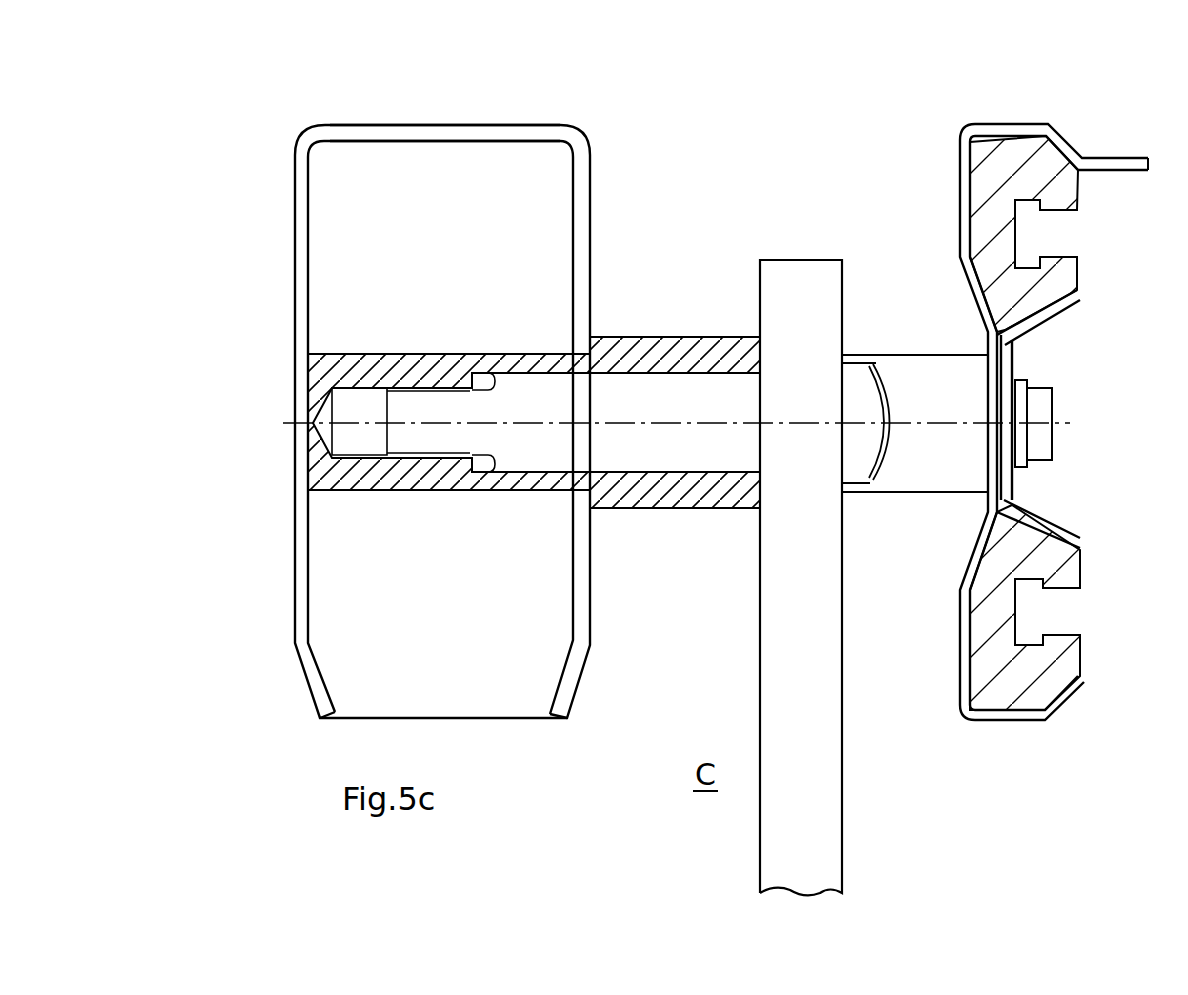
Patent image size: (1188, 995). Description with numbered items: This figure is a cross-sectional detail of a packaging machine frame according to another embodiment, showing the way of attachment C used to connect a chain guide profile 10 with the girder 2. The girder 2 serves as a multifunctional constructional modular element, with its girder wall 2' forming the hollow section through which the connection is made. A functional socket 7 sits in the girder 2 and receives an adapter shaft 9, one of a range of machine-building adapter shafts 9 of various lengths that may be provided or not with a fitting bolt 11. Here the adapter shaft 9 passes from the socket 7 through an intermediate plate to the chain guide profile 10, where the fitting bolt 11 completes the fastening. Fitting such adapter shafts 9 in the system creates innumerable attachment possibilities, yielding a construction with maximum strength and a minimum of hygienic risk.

The girder 2 is at (383, 421).
The girder 2' is at (445, 90).
The functional socket 7 is at (345, 475).
The adapter shaft 9 is at (660, 492).
The chain guide profile 10 is at (1030, 683).
The fitting bolt 11 is at (857, 462).